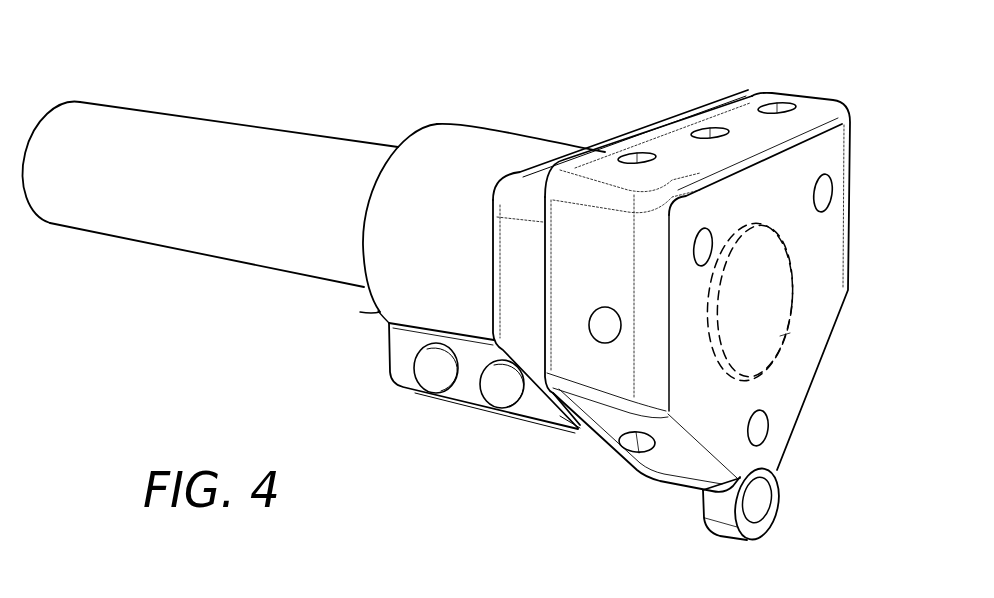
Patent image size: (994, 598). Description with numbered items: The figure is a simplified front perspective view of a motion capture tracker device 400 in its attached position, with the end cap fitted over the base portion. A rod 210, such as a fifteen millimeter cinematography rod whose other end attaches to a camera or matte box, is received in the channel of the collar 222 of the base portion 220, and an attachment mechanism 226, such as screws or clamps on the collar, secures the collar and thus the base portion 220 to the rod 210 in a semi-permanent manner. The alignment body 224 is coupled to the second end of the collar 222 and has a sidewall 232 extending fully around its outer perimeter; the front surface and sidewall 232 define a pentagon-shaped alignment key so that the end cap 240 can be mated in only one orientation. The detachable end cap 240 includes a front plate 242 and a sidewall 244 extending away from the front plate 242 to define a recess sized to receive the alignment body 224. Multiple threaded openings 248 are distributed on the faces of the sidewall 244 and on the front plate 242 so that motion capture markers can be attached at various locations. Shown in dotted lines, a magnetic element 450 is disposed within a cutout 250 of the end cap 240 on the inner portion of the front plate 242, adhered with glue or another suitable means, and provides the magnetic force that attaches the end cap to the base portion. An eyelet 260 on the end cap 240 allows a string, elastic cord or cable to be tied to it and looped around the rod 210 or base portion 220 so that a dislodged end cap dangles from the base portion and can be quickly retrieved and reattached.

The motion capture tracker device 400 is at (286, 66).
The rod 210 is at (240, 212).
The base portion 220 is at (466, 128).
The collar 222 is at (372, 308).
The alignment body 224 is at (612, 137).
The attachment mechanism 226 is at (467, 402).
The sidewall 232 is at (570, 427).
The end cap 240 is at (726, 100).
The front plate 242 is at (793, 392).
The sidewall 244 is at (657, 470).
The threaded openings 248 is at (783, 103).
The cutout 250 is at (787, 334).
The eyelet 260 is at (762, 508).
The magnetic element 450 is at (783, 280).